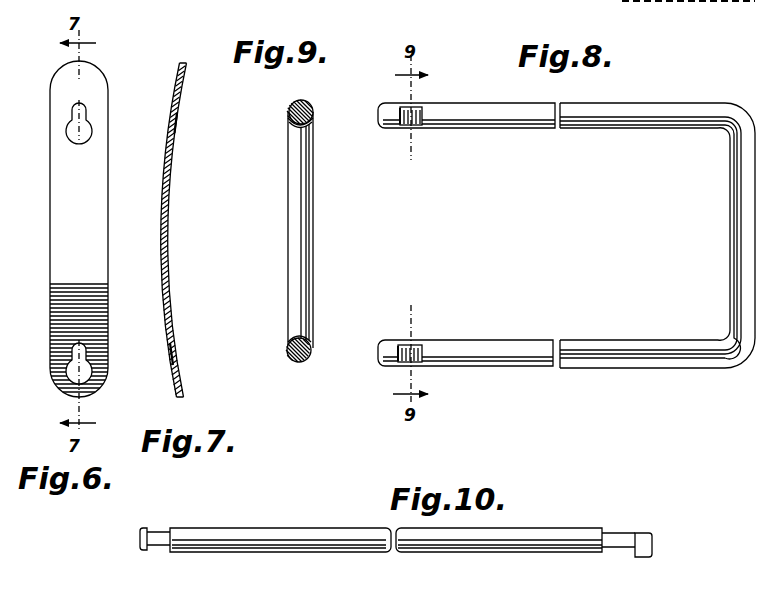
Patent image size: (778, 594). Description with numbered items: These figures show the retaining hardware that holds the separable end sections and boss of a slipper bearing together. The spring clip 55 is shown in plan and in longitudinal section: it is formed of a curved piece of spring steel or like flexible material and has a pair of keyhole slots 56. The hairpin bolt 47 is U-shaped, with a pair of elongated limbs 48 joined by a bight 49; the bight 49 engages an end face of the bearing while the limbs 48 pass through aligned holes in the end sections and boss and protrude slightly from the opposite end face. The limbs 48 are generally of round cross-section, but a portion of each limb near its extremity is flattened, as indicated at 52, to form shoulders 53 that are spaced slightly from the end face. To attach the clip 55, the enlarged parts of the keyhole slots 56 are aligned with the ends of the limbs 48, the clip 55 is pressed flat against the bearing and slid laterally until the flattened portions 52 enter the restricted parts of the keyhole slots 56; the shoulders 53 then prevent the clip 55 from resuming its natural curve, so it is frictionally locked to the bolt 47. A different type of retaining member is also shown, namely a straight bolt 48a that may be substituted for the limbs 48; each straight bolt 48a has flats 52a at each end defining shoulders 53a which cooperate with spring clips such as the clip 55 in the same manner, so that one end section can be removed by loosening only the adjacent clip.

In FIG. 9, the hairpin bolt 47 is at (286, 211).
In FIG. 8, the hairpin bolt 47 is at (697, 102).
In FIG. 9, the limbs 48 is at (305, 100).
In FIG. 8, the limbs 48 is at (500, 130).
In FIG. 9, the bight 49 is at (300, 246).
In FIG. 8, the bight 49 is at (729, 218).
In FIG. 9, the flattened portion 52 is at (290, 106).
In FIG. 8, the flattened portion 52 is at (421, 108).
In FIG. 8, the shoulders 53 is at (402, 125).
In FIG. 6, the spring clip 55 is at (50, 186).
In FIG. 7, the spring clip 55 is at (163, 186).
In FIG. 6, the keyhole slots 56 is at (92, 128).
In FIG. 7, the keyhole slots 56 is at (177, 118).
In FIG. 10, the straight bolts 48a is at (316, 528).
In FIG. 10, the flats 52a is at (172, 528).
In FIG. 10, the shoulders 53a is at (157, 530).